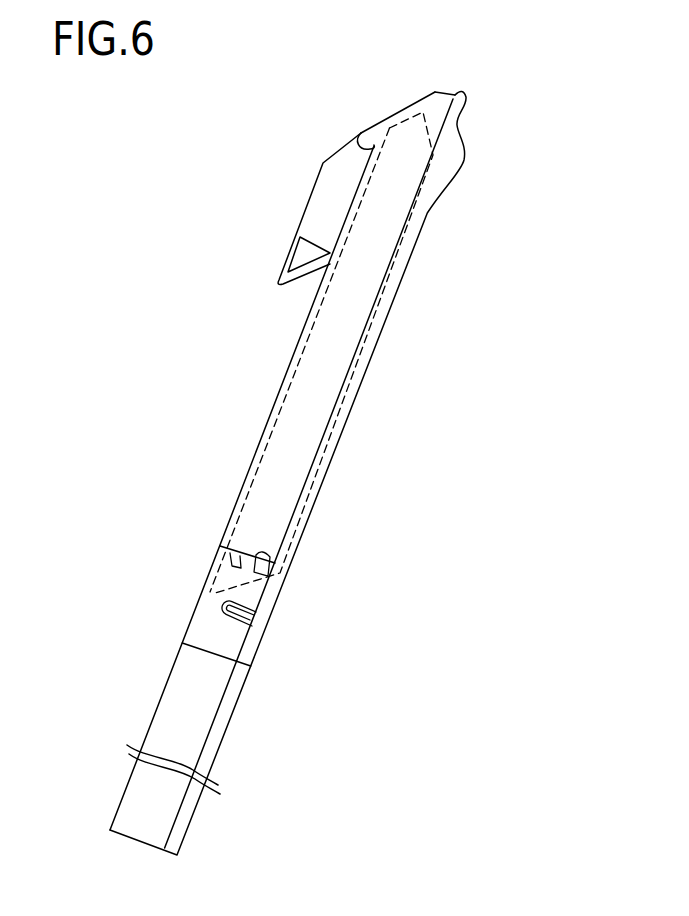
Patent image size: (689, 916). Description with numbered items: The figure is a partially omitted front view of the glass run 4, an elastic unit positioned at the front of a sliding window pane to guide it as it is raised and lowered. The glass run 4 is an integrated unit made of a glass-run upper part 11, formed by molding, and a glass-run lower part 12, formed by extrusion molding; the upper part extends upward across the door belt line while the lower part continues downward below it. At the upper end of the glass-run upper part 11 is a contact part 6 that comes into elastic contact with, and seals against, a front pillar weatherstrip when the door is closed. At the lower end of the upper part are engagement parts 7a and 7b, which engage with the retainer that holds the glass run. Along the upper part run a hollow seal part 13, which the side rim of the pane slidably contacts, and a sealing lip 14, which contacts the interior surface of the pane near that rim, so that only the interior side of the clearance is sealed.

The glass run 4 is at (513, 118).
The contact part 6 is at (335, 168).
The engagement part 7a is at (224, 547).
The engagement part 7b is at (222, 602).
The glass-run upper part 11 is at (397, 293).
The glass-run lower part 12 is at (232, 727).
The hollow seal part 13 is at (303, 387).
The sealing lip 14 is at (320, 447).